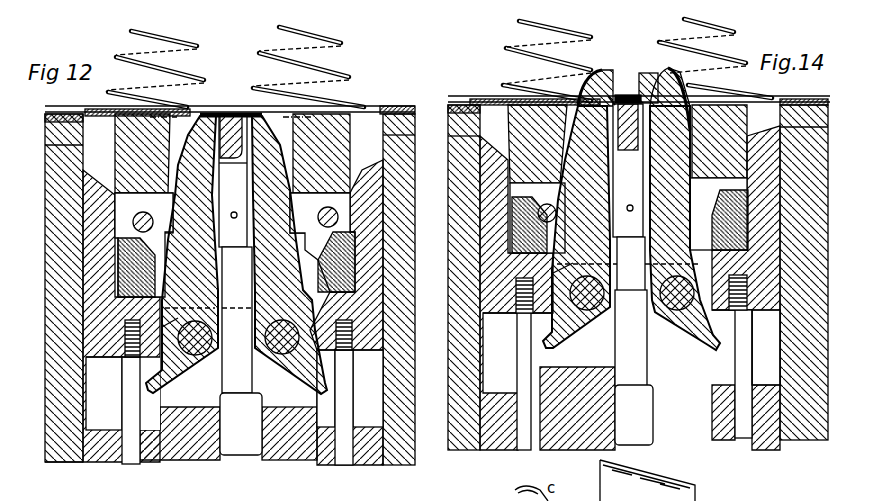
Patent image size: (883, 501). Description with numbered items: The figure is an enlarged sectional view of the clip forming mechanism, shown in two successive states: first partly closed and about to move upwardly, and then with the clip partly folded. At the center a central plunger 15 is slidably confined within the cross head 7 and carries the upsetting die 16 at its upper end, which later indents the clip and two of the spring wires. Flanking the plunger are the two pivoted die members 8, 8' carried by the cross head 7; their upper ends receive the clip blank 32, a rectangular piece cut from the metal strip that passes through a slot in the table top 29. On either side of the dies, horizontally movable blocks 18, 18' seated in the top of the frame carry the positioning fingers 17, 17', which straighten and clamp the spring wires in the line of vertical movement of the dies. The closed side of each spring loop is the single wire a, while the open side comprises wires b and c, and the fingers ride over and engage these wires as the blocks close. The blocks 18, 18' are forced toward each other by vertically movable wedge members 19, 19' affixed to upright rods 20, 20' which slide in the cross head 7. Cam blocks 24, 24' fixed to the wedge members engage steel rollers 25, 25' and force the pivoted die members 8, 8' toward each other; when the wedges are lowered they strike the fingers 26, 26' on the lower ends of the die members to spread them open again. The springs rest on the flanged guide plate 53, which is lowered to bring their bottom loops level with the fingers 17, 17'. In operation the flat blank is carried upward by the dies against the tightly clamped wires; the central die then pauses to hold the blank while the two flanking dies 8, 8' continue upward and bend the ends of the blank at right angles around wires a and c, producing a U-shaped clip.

In FIG. 12, the cross head 7 is at (181, 362).
In FIG. 14, the cross head 7 is at (576, 312).
In FIG. 12, the pivoted die member 8 is at (153, 213).
In FIG. 14, the pivoted die member 8 is at (572, 84).
In FIG. 12, the pivoted die member 8' is at (315, 210).
In FIG. 14, the pivoted die member 8' is at (637, 118).
In FIG. 12, the central plunger 15 is at (241, 424).
In FIG. 14, the central plunger 15 is at (634, 415).
In FIG. 12, the upsetting die 16 is at (235, 254).
In FIG. 14, the upsetting die 16 is at (630, 245).
In FIG. 12, the positioning finger 17 is at (182, 246).
In FIG. 14, the positioning finger 17 is at (578, 215).
In FIG. 12, the positioning finger 17' is at (281, 238).
In FIG. 14, the positioning finger 17' is at (685, 209).
In FIG. 12, the horizontally movable block 18 is at (128, 153).
In FIG. 14, the horizontally movable block 18 is at (525, 144).
In FIG. 12, the horizontally movable block 18' is at (335, 153).
In FIG. 14, the horizontally movable block 18' is at (733, 141).
In FIG. 14, the wedge member 19 is at (635, 277).
In FIG. 12, the wedge member 19' is at (242, 289).
In FIG. 14, the wedge member 19' is at (766, 347).
In FIG. 12, the upright rod 20 is at (123, 405).
In FIG. 12, the upright rod 20' is at (352, 401).
In FIG. 14, the cam block 24 is at (484, 231).
In FIG. 12, the cam block 24' is at (379, 260).
In FIG. 12, the steel roller 25 is at (139, 266).
In FIG. 14, the steel roller 25 is at (544, 204).
In FIG. 12, the steel roller 25' is at (387, 213).
In FIG. 14, the steel roller 25' is at (724, 216).
In FIG. 12, the finger 26 is at (187, 365).
In FIG. 14, the finger 26 is at (587, 293).
In FIG. 12, the finger 26' is at (286, 363).
In FIG. 14, the finger 26' is at (677, 293).
In FIG. 12, the table top 29 is at (409, 126).
In FIG. 14, the table top 29 is at (455, 125).
In FIG. 12, the clip blank 32 is at (266, 108).
In FIG. 12, the guide plate 53 is at (406, 106).
In FIG. 12, the wire a is at (221, 112).
In FIG. 14, the wire a is at (615, 95).
In FIG. 14, the wire b is at (628, 95).
In FIG. 14, the wire c is at (647, 96).